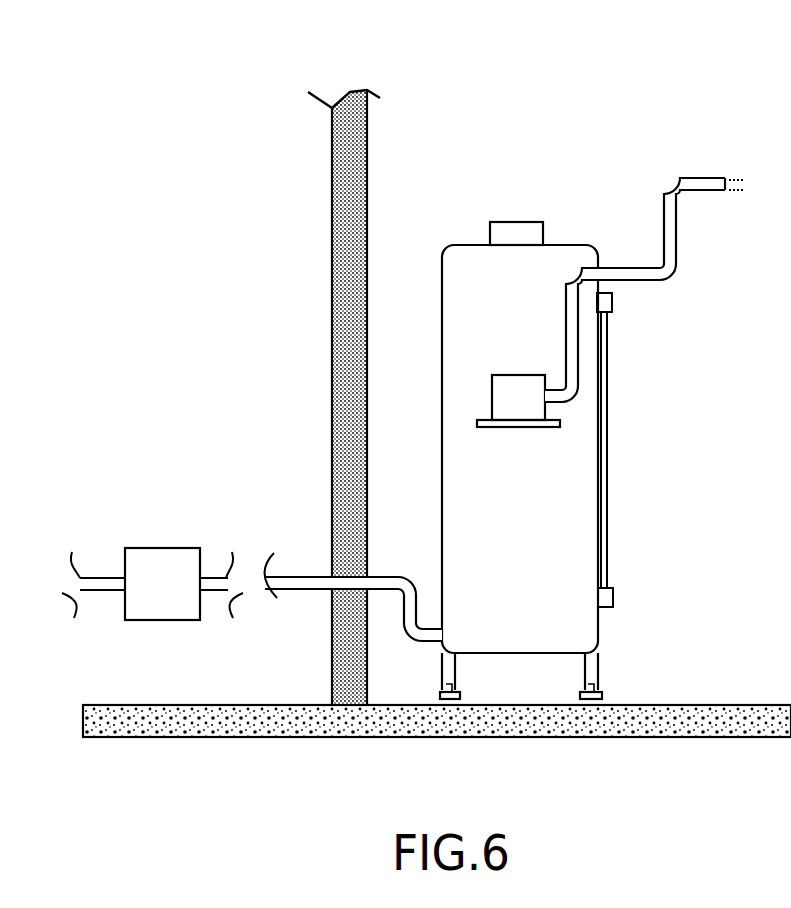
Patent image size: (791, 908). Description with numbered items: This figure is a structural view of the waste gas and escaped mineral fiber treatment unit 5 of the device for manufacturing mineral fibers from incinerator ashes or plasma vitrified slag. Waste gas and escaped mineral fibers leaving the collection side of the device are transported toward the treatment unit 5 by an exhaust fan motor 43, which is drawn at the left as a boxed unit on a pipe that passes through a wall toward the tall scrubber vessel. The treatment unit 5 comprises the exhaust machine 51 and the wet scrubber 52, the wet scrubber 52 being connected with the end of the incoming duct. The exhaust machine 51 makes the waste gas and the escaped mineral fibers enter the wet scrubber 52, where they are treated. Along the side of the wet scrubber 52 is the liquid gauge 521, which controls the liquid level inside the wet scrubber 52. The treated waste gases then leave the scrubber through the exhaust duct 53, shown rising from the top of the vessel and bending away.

The waste gas and escaped mineral fiber treatment unit 5 is at (504, 133).
The exhaust fan motor 43 is at (312, 575).
The exhaust machine 51 is at (163, 548).
The wet scrubber 52 is at (438, 380).
The liquid gauge 521 is at (608, 467).
The exhaust duct 53 is at (700, 175).